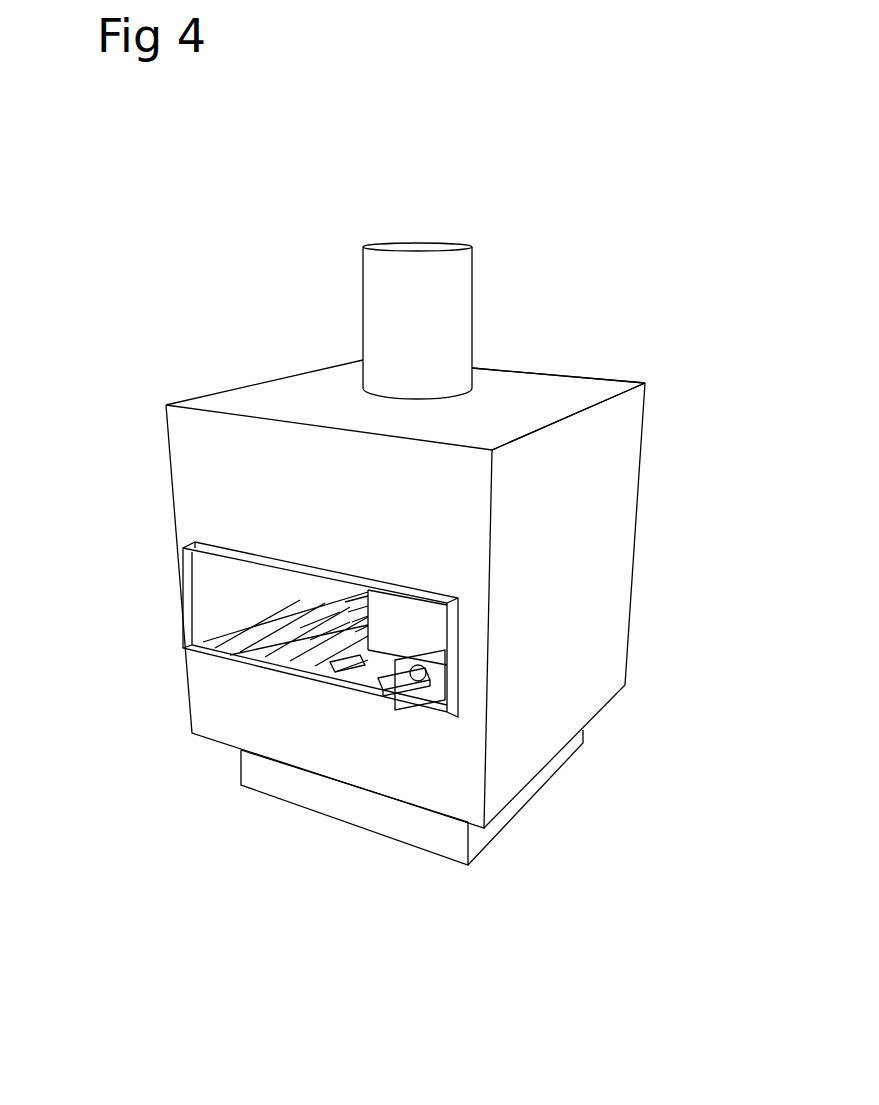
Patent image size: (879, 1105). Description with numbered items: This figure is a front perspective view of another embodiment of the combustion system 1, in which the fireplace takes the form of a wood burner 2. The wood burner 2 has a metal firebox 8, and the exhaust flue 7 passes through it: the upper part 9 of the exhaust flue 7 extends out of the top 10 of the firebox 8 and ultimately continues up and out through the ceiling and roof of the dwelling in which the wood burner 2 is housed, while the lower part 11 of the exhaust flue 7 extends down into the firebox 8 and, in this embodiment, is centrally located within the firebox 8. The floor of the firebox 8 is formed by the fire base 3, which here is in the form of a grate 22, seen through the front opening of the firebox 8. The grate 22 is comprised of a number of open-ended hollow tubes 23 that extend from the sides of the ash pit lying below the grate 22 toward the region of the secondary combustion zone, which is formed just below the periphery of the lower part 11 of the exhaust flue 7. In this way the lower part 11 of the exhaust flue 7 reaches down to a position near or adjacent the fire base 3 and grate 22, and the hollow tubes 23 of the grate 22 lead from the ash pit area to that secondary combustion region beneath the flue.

The combustion system 1 is at (166, 330).
The wood burner 2 is at (146, 416).
The fire base 3 is at (342, 668).
The exhaust flue 7 is at (482, 291).
The firebox 8 is at (605, 540).
The upper part of the exhaust flue 9 is at (398, 286).
The top of the firebox 10 is at (555, 383).
The lower part of the exhaust flue 11 is at (325, 627).
The grate 22 is at (400, 688).
The open-ended hollow tubes 23 is at (330, 625).